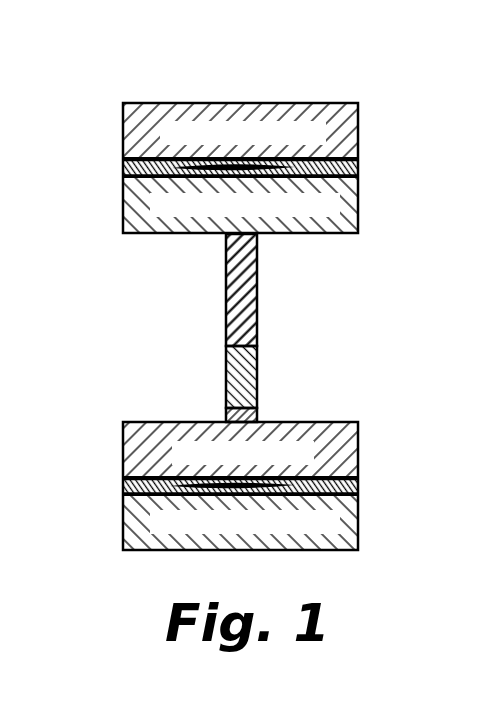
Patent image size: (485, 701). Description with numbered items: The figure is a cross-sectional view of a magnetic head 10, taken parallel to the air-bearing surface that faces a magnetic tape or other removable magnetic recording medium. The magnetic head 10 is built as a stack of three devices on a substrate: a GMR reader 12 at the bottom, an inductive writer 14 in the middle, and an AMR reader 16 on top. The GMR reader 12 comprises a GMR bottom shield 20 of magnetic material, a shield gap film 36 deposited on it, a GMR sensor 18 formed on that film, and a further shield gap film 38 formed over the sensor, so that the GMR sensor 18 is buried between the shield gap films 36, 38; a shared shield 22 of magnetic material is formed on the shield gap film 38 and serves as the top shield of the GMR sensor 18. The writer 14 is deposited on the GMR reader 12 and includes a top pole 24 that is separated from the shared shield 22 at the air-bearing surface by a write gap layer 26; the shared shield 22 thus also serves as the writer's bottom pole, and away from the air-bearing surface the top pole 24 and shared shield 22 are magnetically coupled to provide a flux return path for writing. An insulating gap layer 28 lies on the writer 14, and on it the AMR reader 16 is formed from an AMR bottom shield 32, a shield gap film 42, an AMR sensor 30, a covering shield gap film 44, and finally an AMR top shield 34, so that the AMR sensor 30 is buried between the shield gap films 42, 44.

The magnetic head 10 is at (312, 46).
The GMR reader 12 is at (106, 422).
The writer 14 is at (86, 345).
The AMR reader 16 is at (52, 103).
The GMR sensor 18 is at (165, 483).
The GMR bottom shield 20 is at (358, 522).
The shared shield 22 is at (358, 445).
The top pole 24 is at (258, 372).
The write gap layer 26 is at (268, 413).
The insulating gap layer 28 is at (268, 268).
The AMR sensor 30 is at (172, 167).
The AMR bottom shield 32 is at (358, 205).
The AMR top shield 34 is at (358, 125).
The shield gap film 36 is at (358, 488).
The shield gap film 38 is at (376, 490).
The shield gap film 42 is at (358, 170).
The shield gap film 44 is at (376, 171).